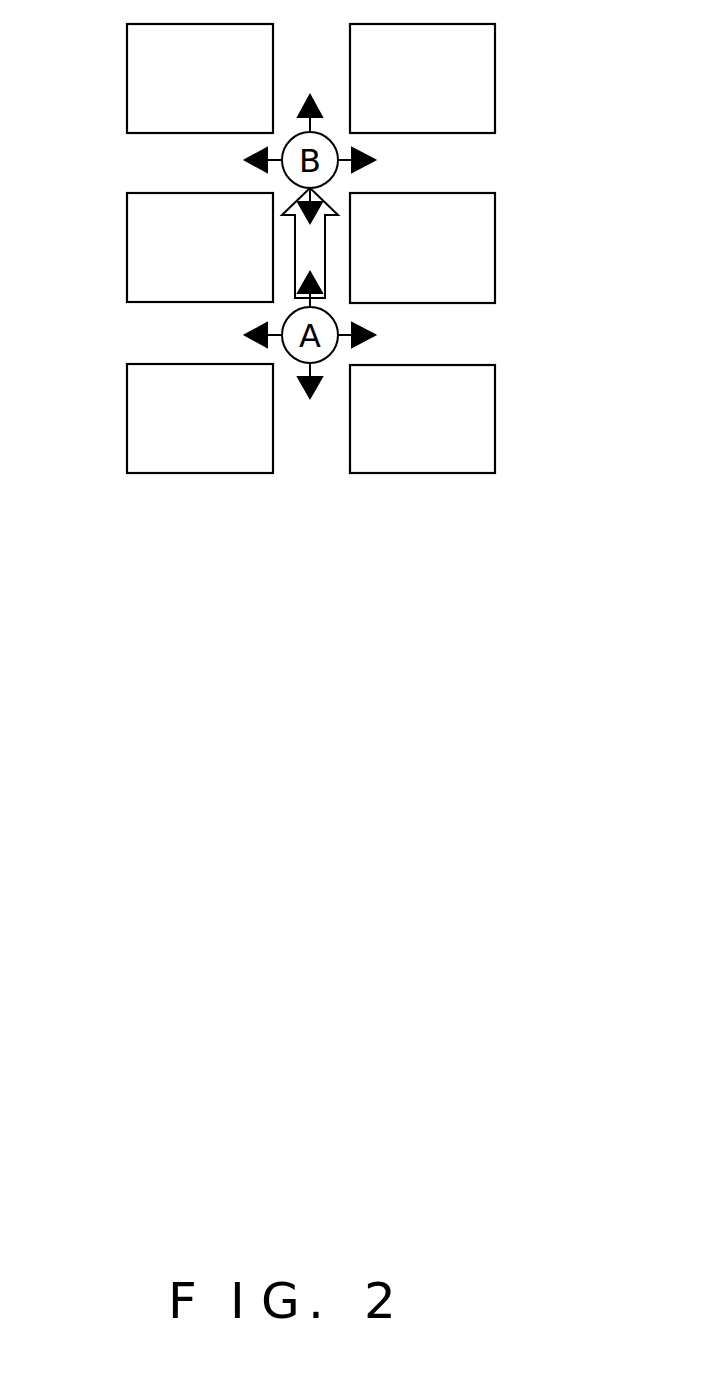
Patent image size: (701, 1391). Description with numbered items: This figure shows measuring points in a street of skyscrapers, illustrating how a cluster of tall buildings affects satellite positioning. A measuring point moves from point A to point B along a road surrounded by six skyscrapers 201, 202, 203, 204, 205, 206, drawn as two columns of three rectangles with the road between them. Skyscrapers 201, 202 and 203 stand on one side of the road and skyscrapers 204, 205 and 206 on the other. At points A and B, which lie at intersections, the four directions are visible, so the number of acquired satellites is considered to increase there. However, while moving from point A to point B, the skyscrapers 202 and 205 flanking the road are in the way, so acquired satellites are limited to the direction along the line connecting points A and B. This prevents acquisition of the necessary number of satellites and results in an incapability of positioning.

The skyscraper 201 is at (127, 82).
The skyscraper 202 is at (127, 253).
The skyscraper 203 is at (127, 420).
The skyscraper 204 is at (495, 82).
The skyscraper 205 is at (495, 252).
The skyscraper 206 is at (495, 422).